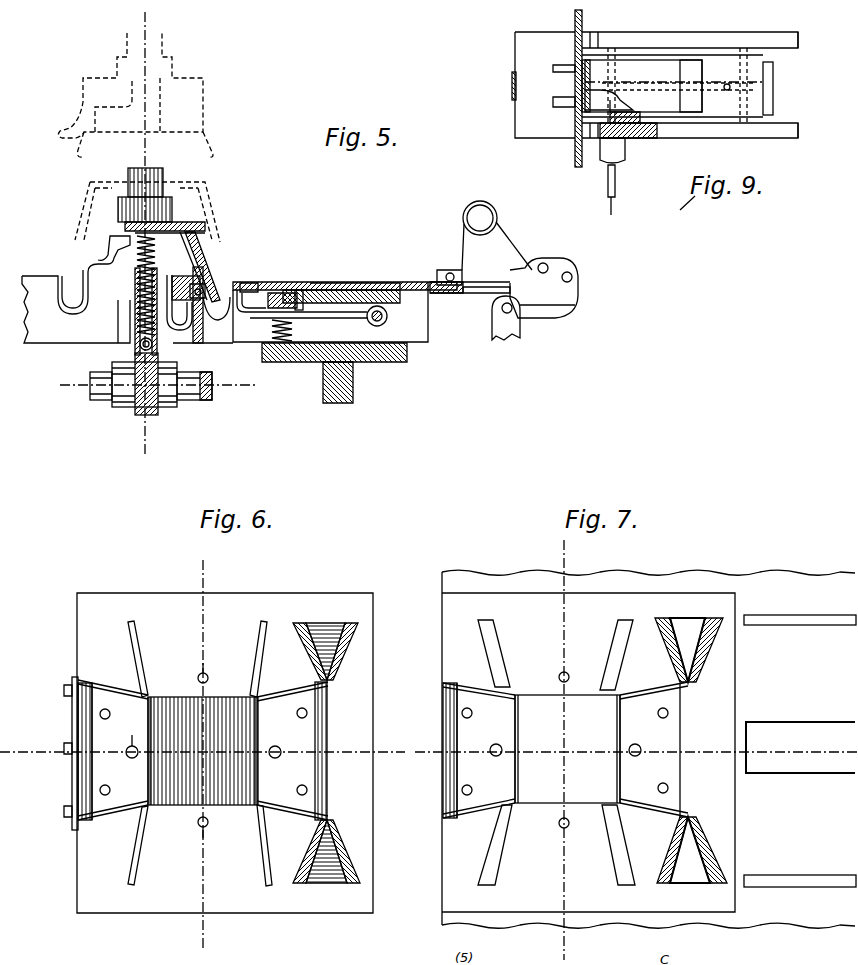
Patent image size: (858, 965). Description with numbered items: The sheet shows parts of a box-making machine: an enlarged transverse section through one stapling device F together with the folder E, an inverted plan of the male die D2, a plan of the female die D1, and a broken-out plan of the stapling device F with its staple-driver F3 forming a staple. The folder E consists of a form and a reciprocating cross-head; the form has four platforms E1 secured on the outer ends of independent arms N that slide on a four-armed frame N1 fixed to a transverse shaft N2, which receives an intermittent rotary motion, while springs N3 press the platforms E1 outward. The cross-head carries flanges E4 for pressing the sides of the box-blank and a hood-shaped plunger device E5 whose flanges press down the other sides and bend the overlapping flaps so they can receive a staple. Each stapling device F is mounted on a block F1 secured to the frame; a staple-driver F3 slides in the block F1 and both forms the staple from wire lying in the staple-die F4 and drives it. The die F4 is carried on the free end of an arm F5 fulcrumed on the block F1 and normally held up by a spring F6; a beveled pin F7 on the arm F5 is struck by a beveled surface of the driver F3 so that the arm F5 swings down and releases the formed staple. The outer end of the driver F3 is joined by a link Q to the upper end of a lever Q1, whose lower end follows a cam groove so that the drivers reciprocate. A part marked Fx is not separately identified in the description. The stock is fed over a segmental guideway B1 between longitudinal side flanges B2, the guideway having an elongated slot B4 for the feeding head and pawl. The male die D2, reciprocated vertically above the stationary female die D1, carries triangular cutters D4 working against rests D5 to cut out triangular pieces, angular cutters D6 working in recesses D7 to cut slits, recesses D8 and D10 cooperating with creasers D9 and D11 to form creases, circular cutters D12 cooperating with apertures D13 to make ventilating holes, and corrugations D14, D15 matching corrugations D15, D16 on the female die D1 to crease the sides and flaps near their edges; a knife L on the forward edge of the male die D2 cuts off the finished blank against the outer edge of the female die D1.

In FIG. 5, the folder E is at (165, 175).
In FIG. 5, the platform E1 is at (179, 289).
In FIG. 5, the flanges E4 is at (195, 280).
In FIG. 5, the plunger device E5 is at (86, 216).
In FIG. 5, the arm N is at (123, 410).
In FIG. 5, the four-armed frame N1 is at (140, 418).
In FIG. 5, the shaft N2 is at (195, 403).
In FIG. 5, the spring N3 is at (135, 343).
In FIG. 5, the inclined arm Fx is at (212, 296).
In FIG. 5, the stapling device F is at (345, 299).
In FIG. 9, the stapling device F is at (690, 77).
In FIG. 5, the block F1 is at (255, 341).
In FIG. 9, the block F1 is at (760, 130).
In FIG. 5, the staple-driver F3 is at (325, 288).
In FIG. 9, the staple-driver F3 is at (623, 46).
In FIG. 5, the staple-die F4 is at (253, 280).
In FIG. 9, the staple-die F4 is at (616, 107).
In FIG. 5, the arm F5 is at (312, 287).
In FIG. 9, the arm F5 is at (650, 82).
In FIG. 5, the spring F6 is at (293, 332).
In FIG. 5, the pin F7 is at (360, 322).
In FIG. 5, the link Q is at (575, 308).
In FIG. 5, the lever Q1 is at (505, 338).
In FIG. 6, the knife L is at (72, 723).
In FIG. 6, the male die D2 is at (275, 905).
In FIG. 6, the triangular cutters D4 is at (340, 648).
In FIG. 6, the angularly-disposed cutters D6 is at (145, 670).
In FIG. 6, the recesses D8 is at (200, 680).
In FIG. 6, the recesses D10 is at (130, 688).
In FIG. 6, the circular cutters D12 is at (118, 726).
In FIG. 6, the corrugations D14 is at (85, 787).
In FIG. 6, the corrugations D15 is at (310, 606).
In FIG. 7, the corrugations D15 is at (445, 722).
In FIG. 7, the female die D1 is at (648, 737).
In FIG. 7, the rests D5 is at (690, 630).
In FIG. 7, the recesses D7 is at (500, 653).
In FIG. 7, the creasers D9 is at (518, 780).
In FIG. 7, the creasers D11 is at (468, 696).
In FIG. 7, the apertures D13 is at (470, 717).
In FIG. 7, the corrugations D16 is at (710, 660).
In FIG. 7, the segmental guideway B1 is at (777, 776).
In FIG. 7, the longitudinal side flanges B2 is at (798, 620).
In FIG. 7, the elongated slot B4 is at (790, 735).